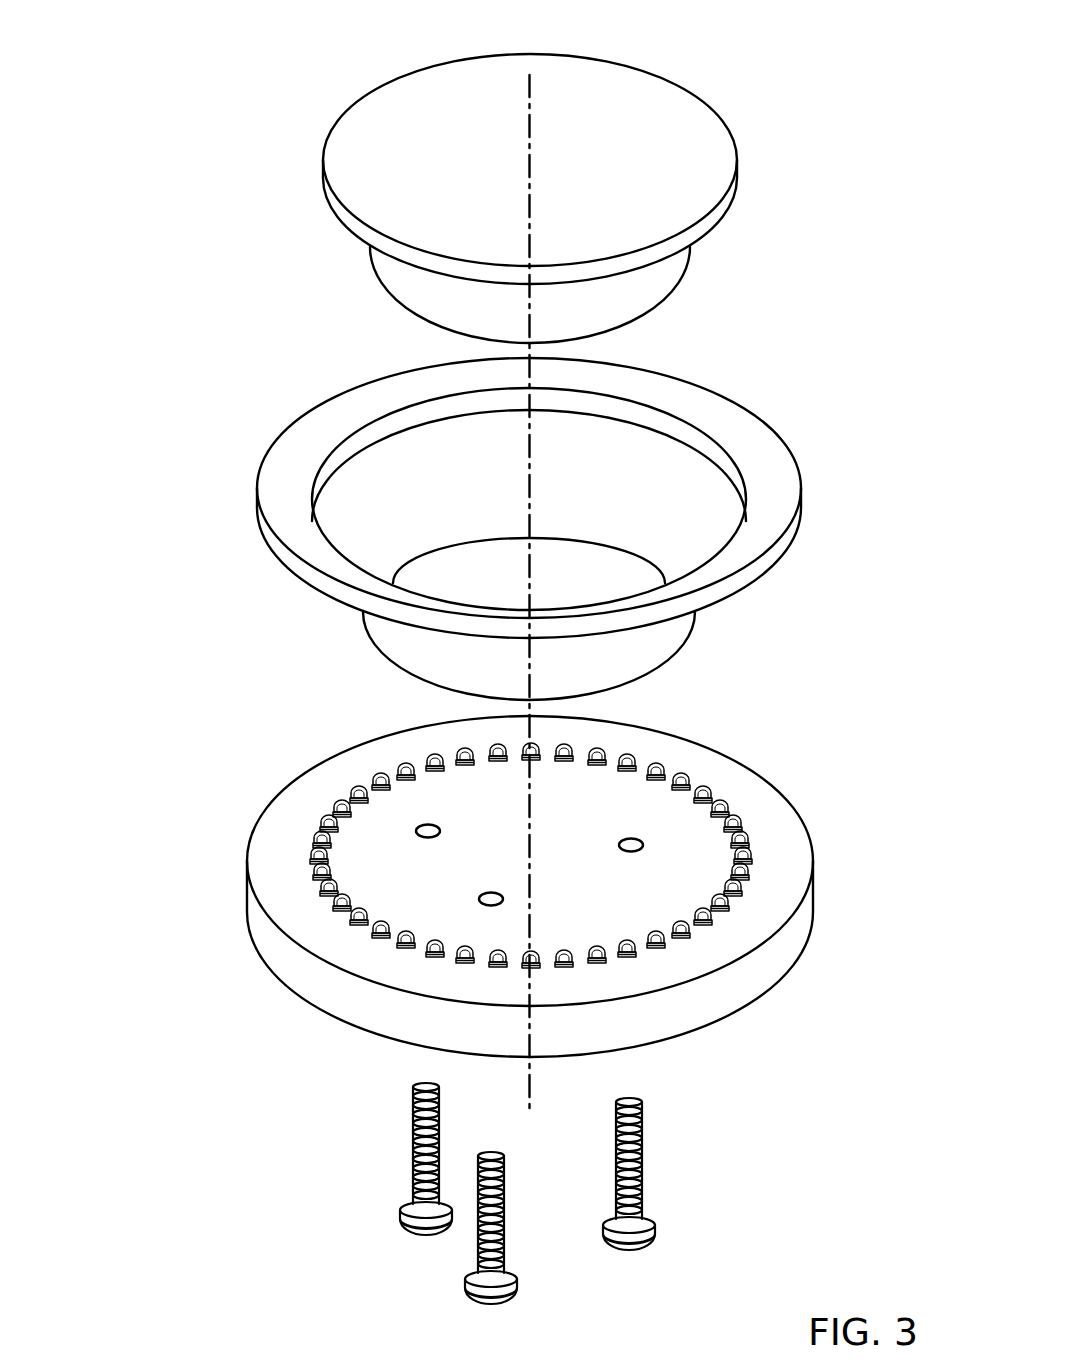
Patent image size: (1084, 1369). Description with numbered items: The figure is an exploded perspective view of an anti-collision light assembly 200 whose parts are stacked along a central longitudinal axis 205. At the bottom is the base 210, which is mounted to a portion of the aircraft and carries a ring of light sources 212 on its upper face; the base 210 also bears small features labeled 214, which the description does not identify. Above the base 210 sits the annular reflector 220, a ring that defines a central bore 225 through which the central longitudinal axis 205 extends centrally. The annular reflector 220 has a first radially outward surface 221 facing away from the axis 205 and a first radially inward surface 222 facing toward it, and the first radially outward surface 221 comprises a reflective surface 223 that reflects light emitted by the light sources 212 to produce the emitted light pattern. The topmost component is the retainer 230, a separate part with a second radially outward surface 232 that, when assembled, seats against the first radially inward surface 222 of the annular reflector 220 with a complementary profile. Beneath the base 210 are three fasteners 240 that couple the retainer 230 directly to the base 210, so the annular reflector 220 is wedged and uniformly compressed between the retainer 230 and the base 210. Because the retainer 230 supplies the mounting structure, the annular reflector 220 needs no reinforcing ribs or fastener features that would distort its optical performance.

The light assembly 200 is at (153, 40).
The central longitudinal axis 205 is at (529, 1075).
The base 210 is at (205, 897).
The light sources 212 is at (433, 954).
The mounting holes 214 is at (484, 898).
The annular reflector 220 is at (190, 488).
The first radially outward surface 221 is at (387, 630).
The first radially inward surface 222 is at (368, 490).
The reflective surface 223 is at (469, 612).
The central bore 225 is at (623, 477).
The retainer 230 is at (238, 187).
The second radially outward surface 232 is at (650, 275).
The fasteners 240 is at (317, 1168).